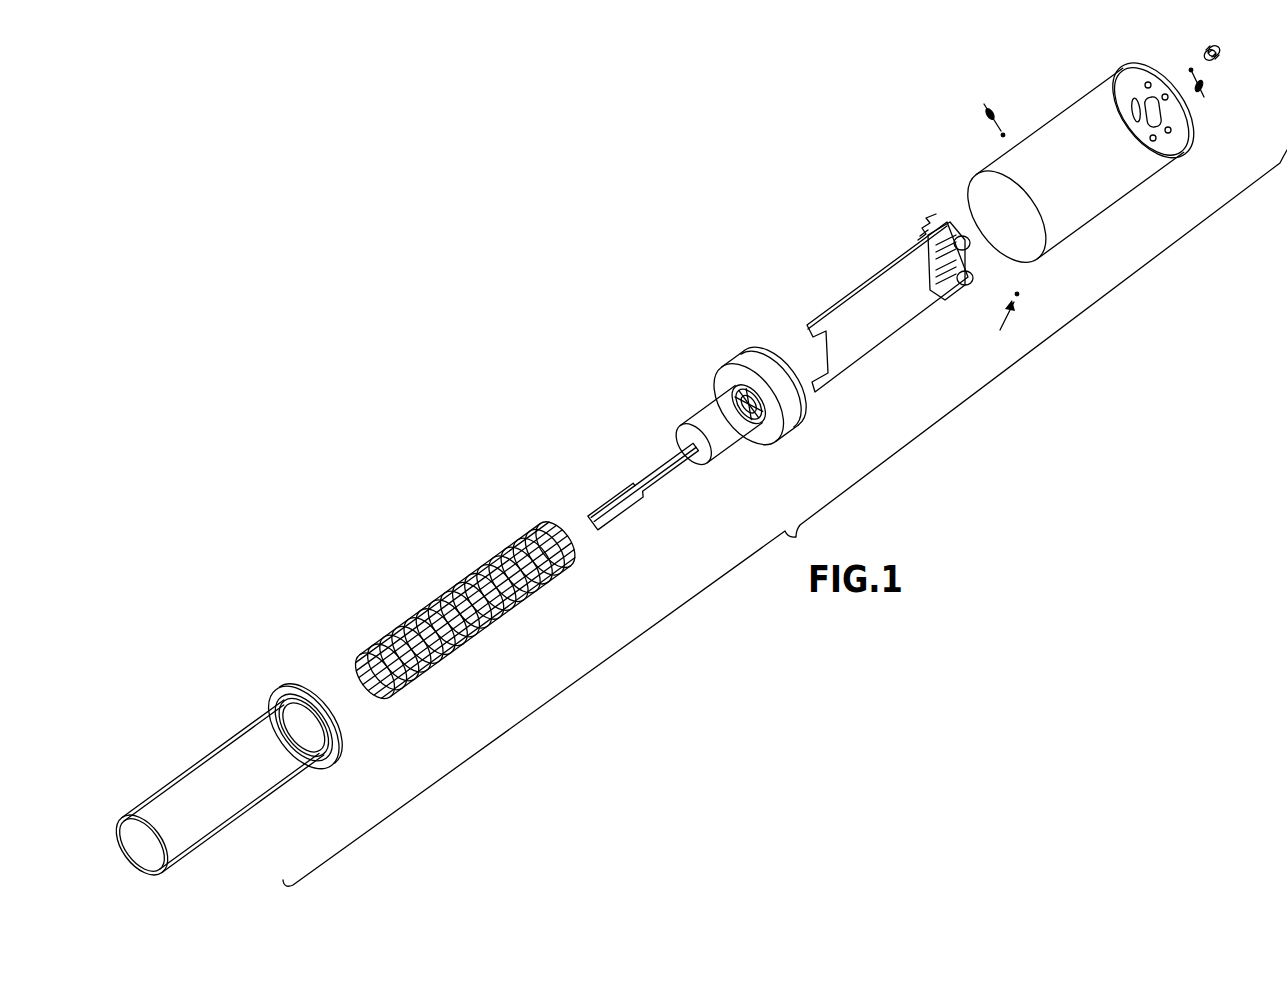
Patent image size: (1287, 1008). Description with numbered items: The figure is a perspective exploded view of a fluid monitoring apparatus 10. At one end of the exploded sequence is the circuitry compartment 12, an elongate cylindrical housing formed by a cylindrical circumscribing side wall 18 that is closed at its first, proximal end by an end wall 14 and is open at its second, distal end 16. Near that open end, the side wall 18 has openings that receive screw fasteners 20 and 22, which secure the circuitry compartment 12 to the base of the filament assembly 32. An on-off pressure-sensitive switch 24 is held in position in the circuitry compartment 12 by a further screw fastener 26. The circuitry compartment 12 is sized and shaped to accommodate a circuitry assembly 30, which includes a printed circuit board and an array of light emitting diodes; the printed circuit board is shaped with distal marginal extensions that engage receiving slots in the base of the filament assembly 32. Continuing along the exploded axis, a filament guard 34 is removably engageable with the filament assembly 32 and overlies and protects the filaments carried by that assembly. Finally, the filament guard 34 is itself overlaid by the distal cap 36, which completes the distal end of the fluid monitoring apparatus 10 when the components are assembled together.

The fluid monitoring apparatus 10 is at (503, 270).
The circuitry compartment 12 is at (1122, 185).
The end wall 14 is at (1130, 84).
The second (distal) end 16 is at (955, 180).
The side wall 18 is at (1076, 115).
The screw fastener 20 is at (984, 104).
The screw fastener 22 is at (1000, 330).
The on-off pressure-sensitive switch 24 is at (1221, 56).
The screw fastener 26 is at (1204, 97).
The circuitry assembly 30 is at (870, 280).
The filament assembly 32 is at (698, 412).
The filament guard 34 is at (455, 588).
The distal cap 36 is at (200, 762).